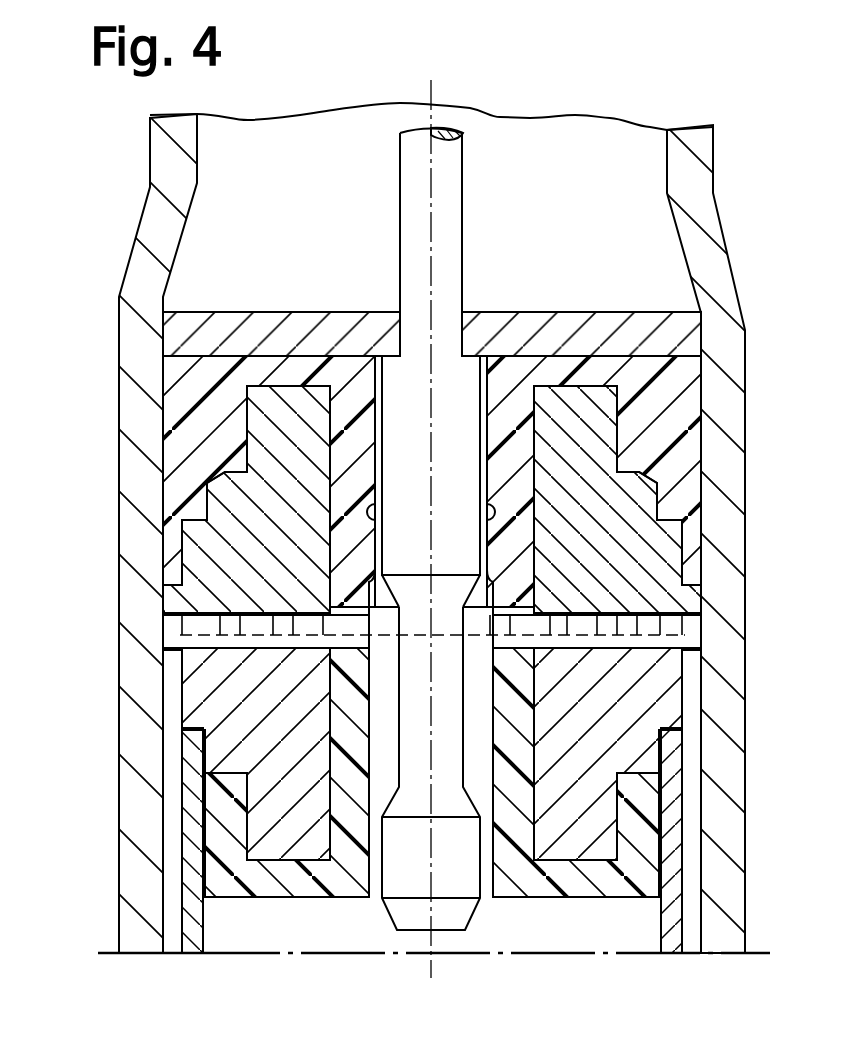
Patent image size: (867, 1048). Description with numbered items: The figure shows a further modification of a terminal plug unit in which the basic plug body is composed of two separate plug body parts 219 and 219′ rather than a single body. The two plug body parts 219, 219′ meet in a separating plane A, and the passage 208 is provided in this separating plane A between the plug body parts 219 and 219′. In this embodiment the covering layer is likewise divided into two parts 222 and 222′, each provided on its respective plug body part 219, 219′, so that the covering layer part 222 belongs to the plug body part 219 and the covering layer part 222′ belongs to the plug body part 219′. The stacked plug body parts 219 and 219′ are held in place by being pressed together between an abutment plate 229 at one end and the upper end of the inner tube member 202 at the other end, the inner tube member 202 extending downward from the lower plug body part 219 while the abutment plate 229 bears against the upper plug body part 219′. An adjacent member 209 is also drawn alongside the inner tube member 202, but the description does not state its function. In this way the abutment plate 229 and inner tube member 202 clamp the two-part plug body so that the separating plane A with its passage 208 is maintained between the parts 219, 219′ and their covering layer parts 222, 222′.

The inner tube member 202 is at (192, 933).
The passage 208 is at (250, 612).
The tubular liner 209 is at (170, 853).
The plug body part 219 is at (220, 702).
The plug body part 219′ is at (230, 532).
The covering layer part 222 is at (267, 883).
The covering layer part 222′ is at (244, 372).
The abutment plate 229 is at (528, 330).
The separating plane A is at (183, 577).